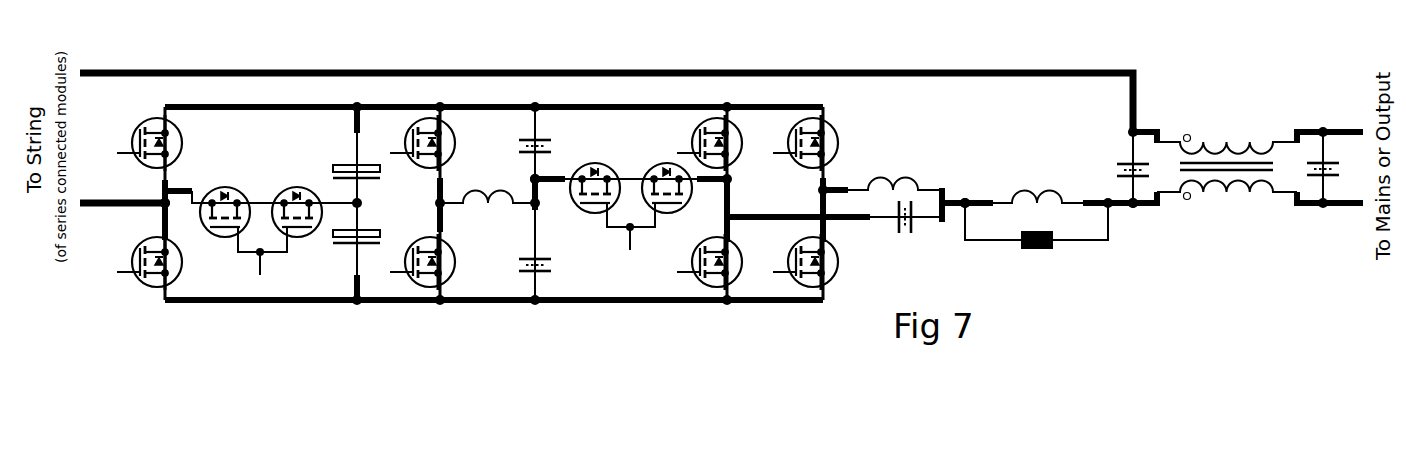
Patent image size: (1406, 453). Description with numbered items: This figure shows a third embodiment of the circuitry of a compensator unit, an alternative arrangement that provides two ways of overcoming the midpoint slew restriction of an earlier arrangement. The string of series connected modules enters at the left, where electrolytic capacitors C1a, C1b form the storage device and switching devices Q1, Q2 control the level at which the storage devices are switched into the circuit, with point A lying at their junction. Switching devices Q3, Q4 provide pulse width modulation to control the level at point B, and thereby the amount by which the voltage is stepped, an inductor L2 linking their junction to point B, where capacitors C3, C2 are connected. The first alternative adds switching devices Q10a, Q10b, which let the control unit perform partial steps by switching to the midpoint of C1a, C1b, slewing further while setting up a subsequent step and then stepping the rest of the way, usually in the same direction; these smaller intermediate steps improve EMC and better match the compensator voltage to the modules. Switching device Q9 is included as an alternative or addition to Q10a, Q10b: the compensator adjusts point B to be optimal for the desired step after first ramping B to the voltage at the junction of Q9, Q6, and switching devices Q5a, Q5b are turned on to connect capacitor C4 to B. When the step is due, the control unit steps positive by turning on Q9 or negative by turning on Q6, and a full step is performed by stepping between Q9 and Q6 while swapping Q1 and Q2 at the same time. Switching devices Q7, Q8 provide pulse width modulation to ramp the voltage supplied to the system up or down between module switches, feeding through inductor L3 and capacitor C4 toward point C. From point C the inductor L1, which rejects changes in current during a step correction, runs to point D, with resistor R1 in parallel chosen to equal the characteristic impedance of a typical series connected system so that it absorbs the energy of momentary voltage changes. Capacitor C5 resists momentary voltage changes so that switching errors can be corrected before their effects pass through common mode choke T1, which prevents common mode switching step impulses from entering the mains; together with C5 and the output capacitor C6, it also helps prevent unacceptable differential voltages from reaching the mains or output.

The switching device Q1 is at (138, 154).
The switching device Q2 is at (138, 272).
The switching device Q3 is at (422, 159).
The switching device Q4 is at (422, 252).
The switching device Q5a is at (600, 214).
The switching device Q5b is at (659, 214).
The switching device Q6 is at (723, 259).
The switching device Q7 is at (819, 139).
The switching device Q8 is at (819, 260).
The switching device Q9 is at (699, 143).
The switching device Q10a is at (230, 205).
The switching device Q10b is at (293, 216).
The electrolytic capacitor C1a is at (341, 149).
The electrolytic capacitor C1b is at (347, 246).
The capacitor C2 is at (526, 251).
The capacitor C3 is at (520, 143).
The capacitor C4 is at (909, 232).
The capacitor C5 is at (1118, 167).
The capacitor C6 is at (1324, 149).
The inductor L1 is at (1035, 186).
The inductor L2 is at (487, 186).
The inductor L3 is at (895, 173).
The resistor R1 is at (1036, 240).
The common mode choke T1 is at (1227, 154).
The point A is at (176, 218).
The point B is at (545, 201).
The point C is at (961, 187).
The point D is at (1130, 217).